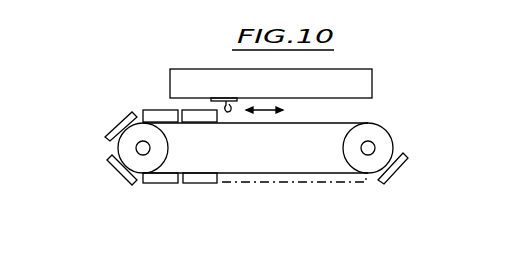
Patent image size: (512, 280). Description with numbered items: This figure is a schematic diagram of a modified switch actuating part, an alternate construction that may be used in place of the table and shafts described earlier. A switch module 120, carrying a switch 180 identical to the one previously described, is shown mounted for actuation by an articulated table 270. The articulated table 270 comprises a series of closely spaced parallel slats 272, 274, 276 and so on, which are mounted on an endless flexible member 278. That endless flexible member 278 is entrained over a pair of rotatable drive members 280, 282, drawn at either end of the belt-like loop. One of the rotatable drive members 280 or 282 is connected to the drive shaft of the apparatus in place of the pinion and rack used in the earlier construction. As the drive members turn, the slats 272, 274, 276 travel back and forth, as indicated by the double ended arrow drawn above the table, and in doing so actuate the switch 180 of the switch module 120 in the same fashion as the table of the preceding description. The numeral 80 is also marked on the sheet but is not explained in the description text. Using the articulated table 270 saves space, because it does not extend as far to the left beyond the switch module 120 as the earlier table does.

The frame 80 is at (211, 0).
The switch module 120 is at (271, 83).
The switch 180 is at (221, 98).
The articulated table 270 is at (297, 186).
The slat 272 is at (192, 110).
The slat 274 is at (147, 110).
The slat 276 is at (112, 123).
The endless flexible member 278 is at (344, 123).
The rotatable drive member 280 is at (393, 142).
The rotatable drive member 282 is at (155, 148).